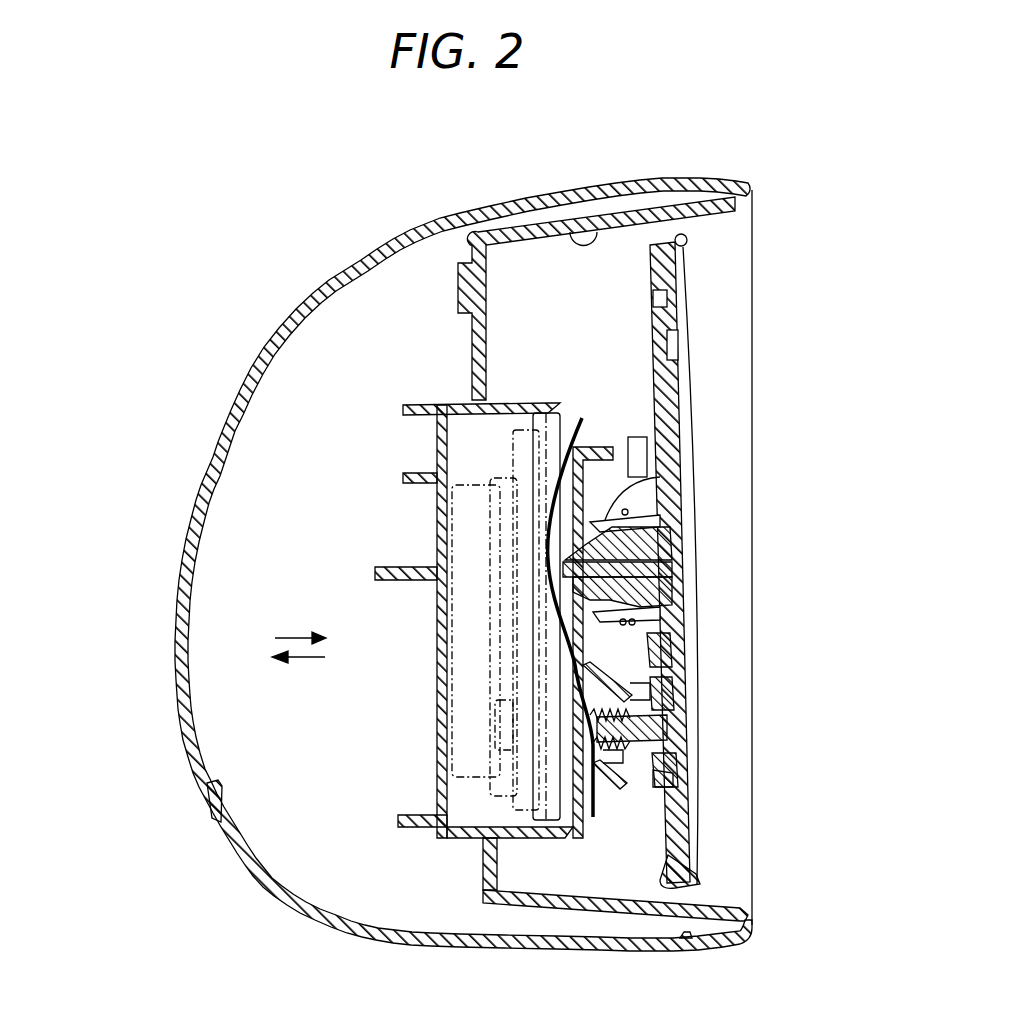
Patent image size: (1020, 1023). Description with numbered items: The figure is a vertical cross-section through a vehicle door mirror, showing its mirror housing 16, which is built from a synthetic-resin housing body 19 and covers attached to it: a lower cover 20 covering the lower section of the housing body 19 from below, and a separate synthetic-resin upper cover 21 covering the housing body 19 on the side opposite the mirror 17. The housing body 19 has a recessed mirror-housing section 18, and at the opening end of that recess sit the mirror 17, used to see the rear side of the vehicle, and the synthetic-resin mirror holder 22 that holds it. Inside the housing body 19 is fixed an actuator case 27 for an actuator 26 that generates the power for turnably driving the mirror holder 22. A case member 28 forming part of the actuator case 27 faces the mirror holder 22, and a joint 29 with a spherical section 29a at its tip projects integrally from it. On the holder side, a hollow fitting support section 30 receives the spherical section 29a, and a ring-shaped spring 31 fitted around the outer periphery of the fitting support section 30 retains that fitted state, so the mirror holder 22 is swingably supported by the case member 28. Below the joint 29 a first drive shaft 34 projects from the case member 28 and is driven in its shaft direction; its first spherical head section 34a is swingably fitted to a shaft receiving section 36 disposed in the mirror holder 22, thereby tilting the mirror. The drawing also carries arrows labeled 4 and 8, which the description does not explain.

The mirror housing 16 is at (95, 752).
The mirror 17 is at (685, 545).
The recessed mirror-housing section 18 is at (594, 230).
The housing body 19 is at (445, 757).
The lower cover 20 is at (243, 872).
The upper cover 21 is at (183, 725).
The mirror holder 22 is at (673, 387).
The actuator 26 is at (507, 683).
The actuator case 27 is at (547, 443).
The case member 28 is at (587, 455).
The joint 29 is at (587, 606).
The spherical section 29a is at (687, 623).
The fitting support section 30 is at (660, 477).
The ring-shaped spring 31 is at (627, 627).
The first drive shaft 34 is at (600, 795).
The first spherical head section 34a is at (670, 730).
The shaft receiving section 36 is at (640, 757).
The direction arrow 4 is at (300, 623).
The direction arrow 8 is at (298, 674).